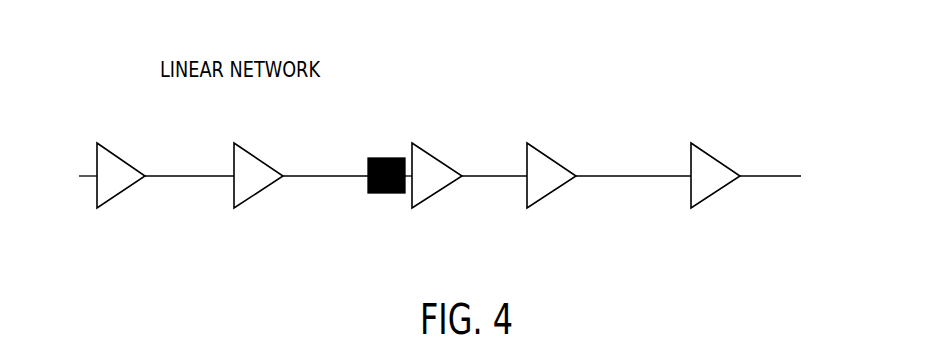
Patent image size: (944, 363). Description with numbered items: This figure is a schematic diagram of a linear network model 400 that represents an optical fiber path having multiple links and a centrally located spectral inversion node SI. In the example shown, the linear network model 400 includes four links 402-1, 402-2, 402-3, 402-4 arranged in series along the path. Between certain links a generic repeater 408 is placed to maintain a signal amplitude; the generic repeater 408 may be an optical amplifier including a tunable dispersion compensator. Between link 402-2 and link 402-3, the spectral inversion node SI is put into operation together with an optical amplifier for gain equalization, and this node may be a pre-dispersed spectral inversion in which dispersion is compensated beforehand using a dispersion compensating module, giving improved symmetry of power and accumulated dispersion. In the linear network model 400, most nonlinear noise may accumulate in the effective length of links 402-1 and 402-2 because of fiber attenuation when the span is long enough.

The linear network model 400 is at (420, 133).
The generic repeater 408 is at (117, 157).
The link 402-1 is at (177, 175).
The link 402-2 is at (303, 175).
The link 402-3 is at (492, 175).
The link 402-4 is at (650, 175).